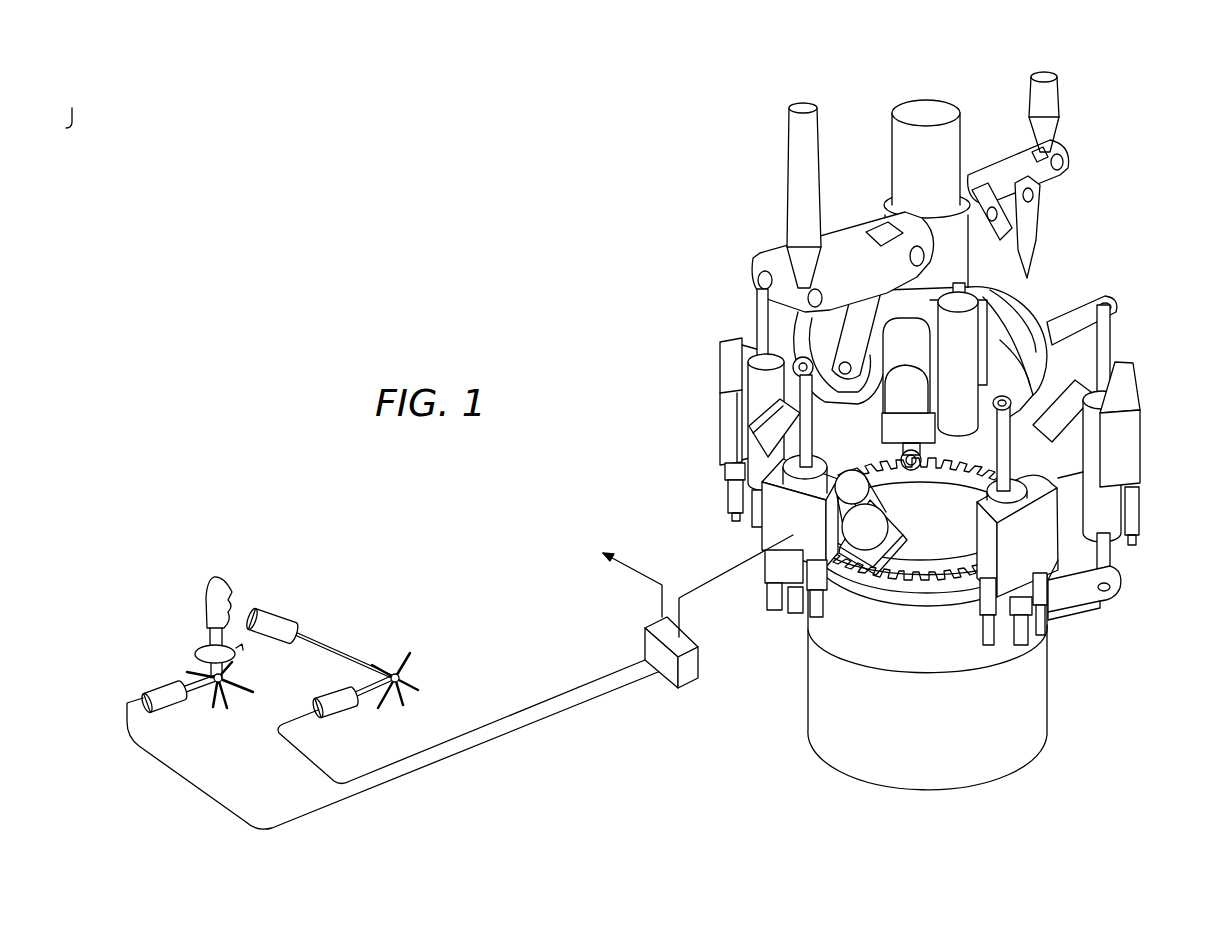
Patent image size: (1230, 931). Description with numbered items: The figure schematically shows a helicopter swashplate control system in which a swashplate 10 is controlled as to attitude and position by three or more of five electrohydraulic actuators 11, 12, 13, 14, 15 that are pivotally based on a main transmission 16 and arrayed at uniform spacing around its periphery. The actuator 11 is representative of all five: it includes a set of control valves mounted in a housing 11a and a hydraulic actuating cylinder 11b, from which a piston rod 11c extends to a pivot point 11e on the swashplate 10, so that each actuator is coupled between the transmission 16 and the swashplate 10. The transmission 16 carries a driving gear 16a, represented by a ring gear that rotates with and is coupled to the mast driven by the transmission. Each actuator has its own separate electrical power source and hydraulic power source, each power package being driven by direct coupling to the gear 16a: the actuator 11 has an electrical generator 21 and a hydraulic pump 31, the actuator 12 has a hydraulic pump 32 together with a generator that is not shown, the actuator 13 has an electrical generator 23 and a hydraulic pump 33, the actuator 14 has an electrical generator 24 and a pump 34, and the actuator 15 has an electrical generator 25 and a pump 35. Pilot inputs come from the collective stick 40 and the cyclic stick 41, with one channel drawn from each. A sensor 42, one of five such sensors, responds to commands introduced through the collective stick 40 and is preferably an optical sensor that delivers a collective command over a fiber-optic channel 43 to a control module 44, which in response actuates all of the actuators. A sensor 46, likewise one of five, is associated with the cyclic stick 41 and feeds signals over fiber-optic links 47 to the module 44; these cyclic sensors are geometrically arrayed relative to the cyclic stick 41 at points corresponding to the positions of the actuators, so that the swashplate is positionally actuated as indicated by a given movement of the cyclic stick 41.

The swashplate 10 is at (1065, 318).
The electrohydraulic actuator 11 is at (1152, 383).
The housing 11a is at (1135, 446).
The hydraulic actuating cylinder 11b is at (1103, 506).
The piston rod 11c is at (1118, 397).
The pivot point 11e is at (1118, 311).
The electrohydraulic actuator 12 is at (1037, 562).
The electrohydraulic actuator 13 is at (802, 527).
The electrohydraulic actuator 14 is at (723, 408).
The electrohydraulic actuator 15 is at (1000, 284).
The main transmission 16 is at (951, 735).
The driving gear 16a is at (912, 574).
The electrical generator 21 is at (1045, 466).
The electrical generator 23 is at (870, 532).
The electrical generator 24 is at (823, 468).
The electrical generator 25 is at (920, 404).
The hydraulic pump 31 is at (1075, 432).
The hydraulic pump 32 is at (1030, 483).
The hydraulic pump 33 is at (862, 507).
The pump 34 is at (789, 447).
The pump 35 is at (920, 352).
The collective stick 40 is at (283, 617).
The cyclic stick 41 is at (208, 598).
The sensor 42 is at (343, 702).
The fiber-optic channel 43 is at (374, 772).
The control module 44 is at (652, 641).
The sensor 46 is at (160, 690).
The fiber-optic links 47 is at (355, 793).